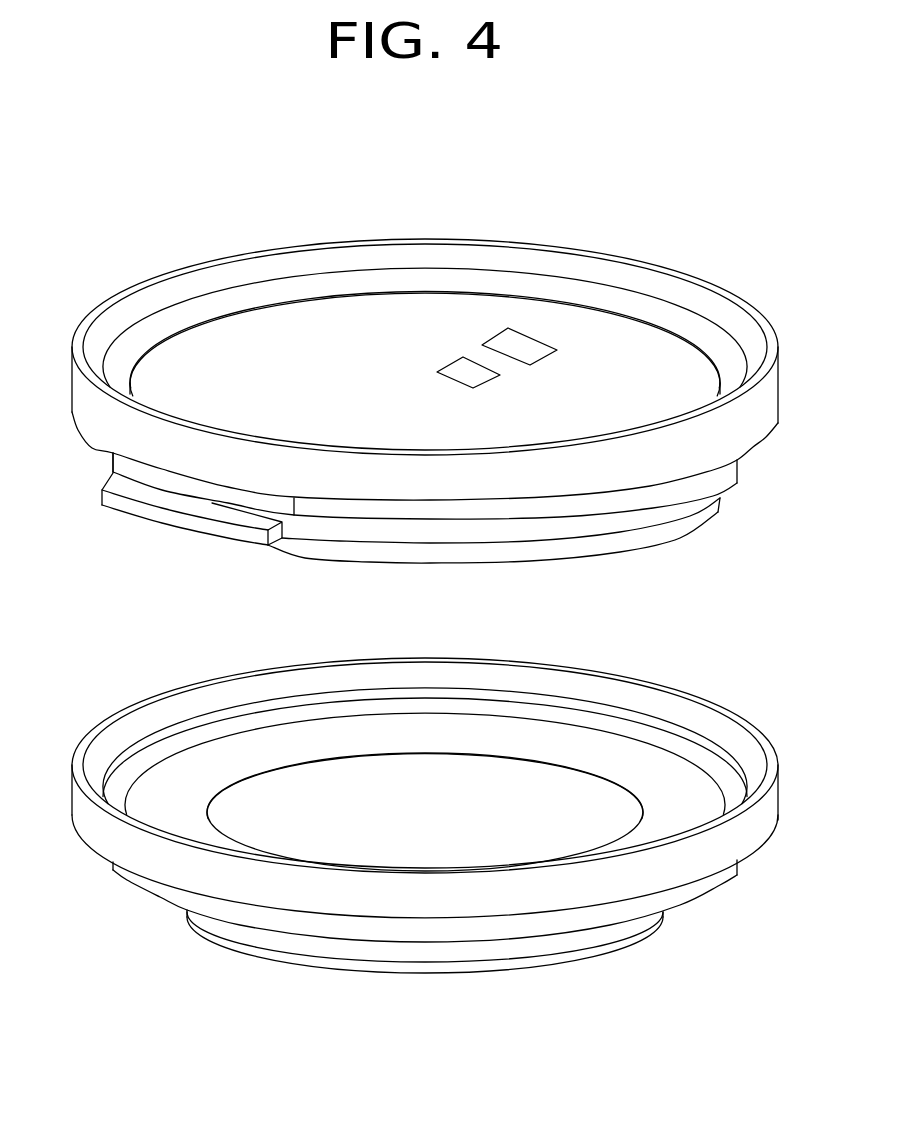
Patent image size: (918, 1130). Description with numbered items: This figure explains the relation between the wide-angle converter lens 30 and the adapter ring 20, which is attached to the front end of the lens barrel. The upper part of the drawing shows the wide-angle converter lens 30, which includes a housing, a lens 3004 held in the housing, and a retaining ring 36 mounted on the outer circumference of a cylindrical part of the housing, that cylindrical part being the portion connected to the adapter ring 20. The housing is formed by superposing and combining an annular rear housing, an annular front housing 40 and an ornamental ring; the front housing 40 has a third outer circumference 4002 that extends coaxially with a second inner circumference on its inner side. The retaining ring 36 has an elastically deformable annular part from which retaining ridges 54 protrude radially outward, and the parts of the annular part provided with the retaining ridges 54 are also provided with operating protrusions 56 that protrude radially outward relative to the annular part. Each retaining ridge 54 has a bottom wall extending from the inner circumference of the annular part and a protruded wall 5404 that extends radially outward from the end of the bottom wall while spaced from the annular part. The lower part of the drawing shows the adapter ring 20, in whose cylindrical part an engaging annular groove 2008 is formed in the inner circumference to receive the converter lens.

The adapter ring 20 is at (633, 949).
The engaging annular groove 2008 is at (672, 734).
The wide-angle converter lens 30 is at (531, 216).
The lens 3004 is at (287, 343).
The retaining ring 36 is at (93, 444).
The front housing 40 is at (425, 536).
The third outer circumference 4002 is at (367, 480).
The retaining ridge 54 is at (192, 545).
The protruded wall 5404 is at (192, 523).
The operating protrusion 56 is at (152, 498).